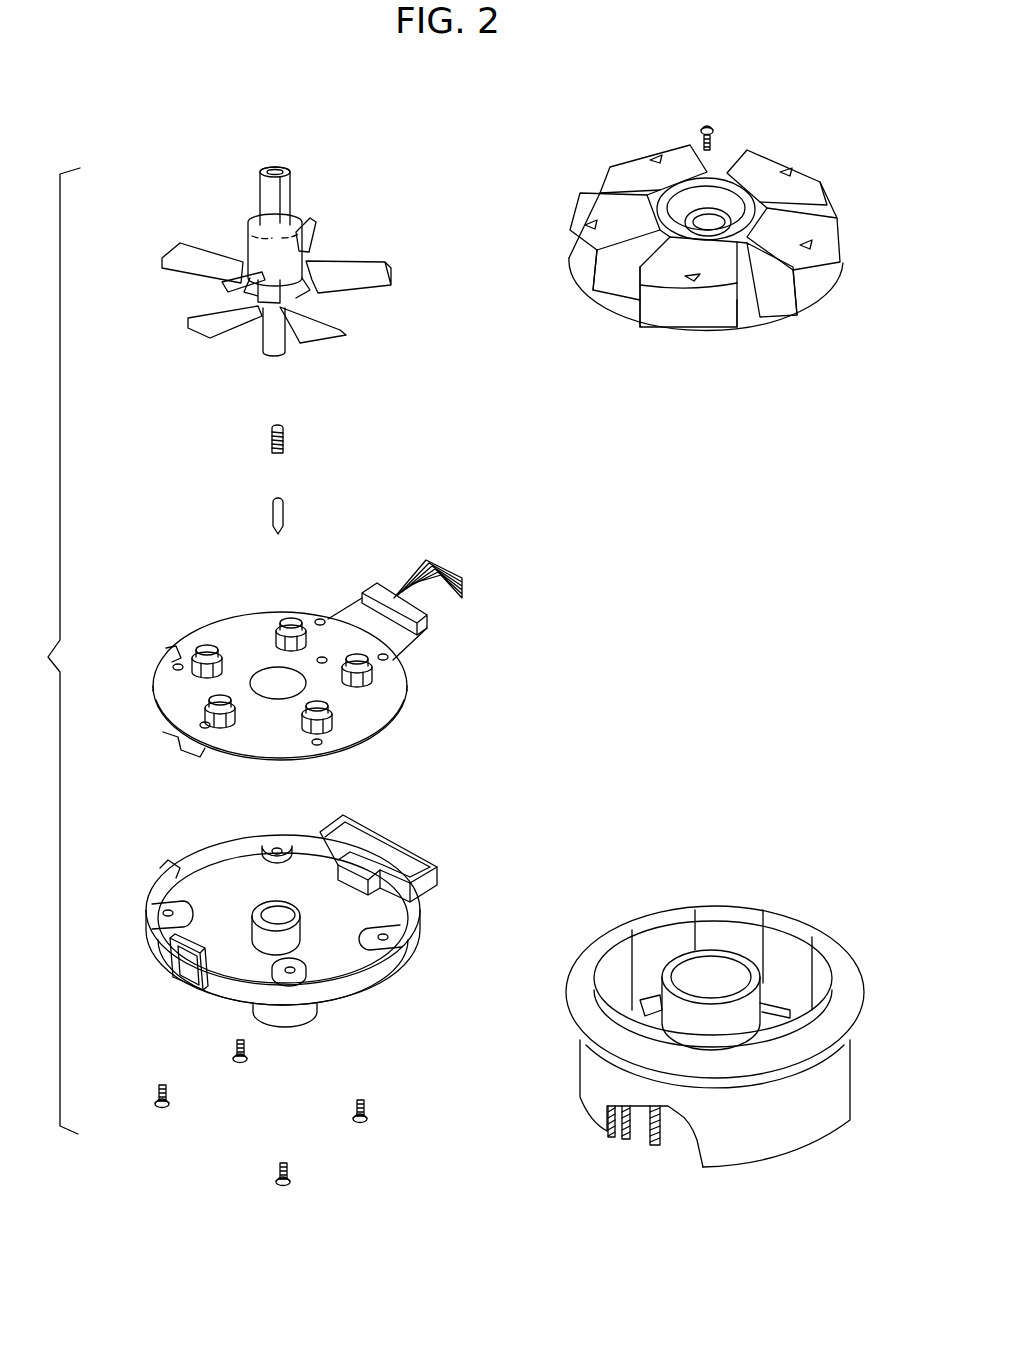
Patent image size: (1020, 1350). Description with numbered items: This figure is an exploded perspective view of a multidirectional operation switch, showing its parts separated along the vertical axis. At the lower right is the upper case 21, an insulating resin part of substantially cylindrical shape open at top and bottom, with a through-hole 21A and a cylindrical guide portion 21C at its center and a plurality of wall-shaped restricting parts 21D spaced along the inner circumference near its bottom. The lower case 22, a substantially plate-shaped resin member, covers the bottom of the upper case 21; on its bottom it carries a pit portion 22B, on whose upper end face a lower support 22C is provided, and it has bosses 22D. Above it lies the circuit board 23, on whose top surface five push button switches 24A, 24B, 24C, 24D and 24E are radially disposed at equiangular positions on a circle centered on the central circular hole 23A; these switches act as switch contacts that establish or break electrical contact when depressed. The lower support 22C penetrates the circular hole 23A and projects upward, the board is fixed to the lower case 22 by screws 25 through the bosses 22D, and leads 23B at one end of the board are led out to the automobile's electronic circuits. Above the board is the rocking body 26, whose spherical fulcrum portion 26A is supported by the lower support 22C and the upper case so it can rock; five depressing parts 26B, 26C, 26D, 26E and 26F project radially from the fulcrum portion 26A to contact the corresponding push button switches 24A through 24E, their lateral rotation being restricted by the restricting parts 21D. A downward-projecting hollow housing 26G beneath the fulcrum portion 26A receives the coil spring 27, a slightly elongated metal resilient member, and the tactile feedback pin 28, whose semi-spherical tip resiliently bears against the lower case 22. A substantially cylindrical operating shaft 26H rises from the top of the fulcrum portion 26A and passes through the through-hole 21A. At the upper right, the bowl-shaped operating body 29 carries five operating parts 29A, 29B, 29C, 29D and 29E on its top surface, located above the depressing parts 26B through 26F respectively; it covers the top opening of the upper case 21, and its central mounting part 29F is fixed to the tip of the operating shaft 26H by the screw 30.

The upper case 21 is at (683, 892).
The through-hole 21A is at (728, 973).
The cylindrical guide portion 21C is at (657, 1007).
The restricting parts 21D is at (667, 1133).
The lower case 22 is at (185, 858).
The pit portion 22B is at (303, 1012).
The lower support 22C is at (275, 915).
The bosses 22D is at (155, 918).
The circuit board 23 is at (243, 623).
The central circular hole 23A is at (272, 682).
The leads 23B is at (423, 557).
The push button switch 24A is at (332, 720).
The push button switch 24B is at (370, 673).
The push button switch 24C is at (300, 622).
The push button switch 24D is at (197, 650).
The push button switch 24E is at (208, 710).
The screws 25 is at (163, 1107).
The rocking body 26 is at (237, 260).
The fulcrum portion 26A is at (227, 285).
The depressing part 26B is at (330, 337).
The depressing part 26C is at (373, 272).
The depressing part 26D is at (310, 222).
The depressing part 26E is at (187, 257).
The depressing part 26F is at (192, 328).
The housing 26G is at (270, 343).
The operating shaft 26H is at (240, 250).
The coil spring 27 is at (287, 435).
The tactile feedback pin 28 is at (287, 513).
The operating body 29 is at (763, 333).
The operating part 29A is at (802, 225).
The operating part 29B is at (767, 165).
The operating part 29C is at (633, 165).
The operating part 29D is at (590, 212).
The operating part 29E is at (673, 267).
The mounting part 29F is at (707, 222).
The screw 30 is at (710, 128).